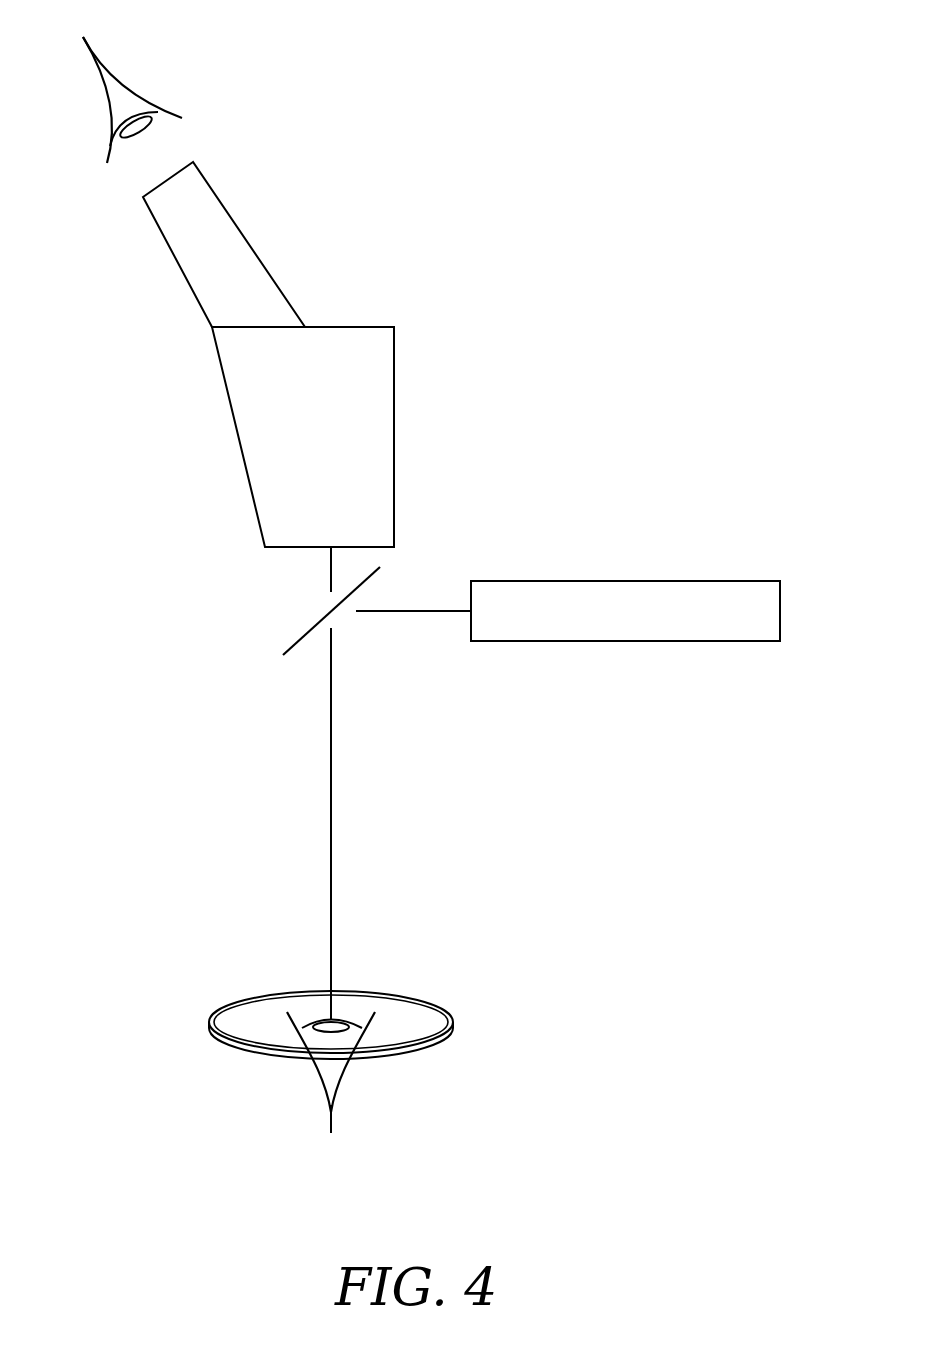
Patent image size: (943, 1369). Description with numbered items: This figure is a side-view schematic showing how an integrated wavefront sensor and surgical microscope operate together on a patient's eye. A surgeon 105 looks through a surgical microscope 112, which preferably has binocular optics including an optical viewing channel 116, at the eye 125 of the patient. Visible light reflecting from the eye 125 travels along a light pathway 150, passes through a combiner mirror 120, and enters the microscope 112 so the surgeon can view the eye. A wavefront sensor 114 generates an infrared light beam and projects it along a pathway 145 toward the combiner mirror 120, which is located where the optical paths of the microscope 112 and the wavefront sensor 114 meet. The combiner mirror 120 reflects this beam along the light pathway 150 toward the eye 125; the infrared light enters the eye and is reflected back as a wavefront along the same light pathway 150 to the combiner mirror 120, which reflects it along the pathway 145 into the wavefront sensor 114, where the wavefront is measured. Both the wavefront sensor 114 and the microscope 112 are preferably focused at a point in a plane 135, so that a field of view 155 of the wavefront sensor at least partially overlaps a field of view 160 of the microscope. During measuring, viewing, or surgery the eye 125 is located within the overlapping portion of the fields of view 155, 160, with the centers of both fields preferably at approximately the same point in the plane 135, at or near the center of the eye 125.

The surgeon 105 is at (142, 80).
The optical viewing channel 116 is at (258, 255).
The surgical microscope 112 is at (397, 435).
The wavefront sensor 114 is at (625, 580).
The pathway 145 is at (415, 610).
The combiner mirror 120 is at (337, 613).
The light pathway 150 is at (332, 830).
The field of view of the microscope 160 is at (212, 1008).
The field of view of the wavefront sensor 155 is at (443, 1040).
The eye 125 is at (318, 1078).
The plane 135 is at (340, 1022).